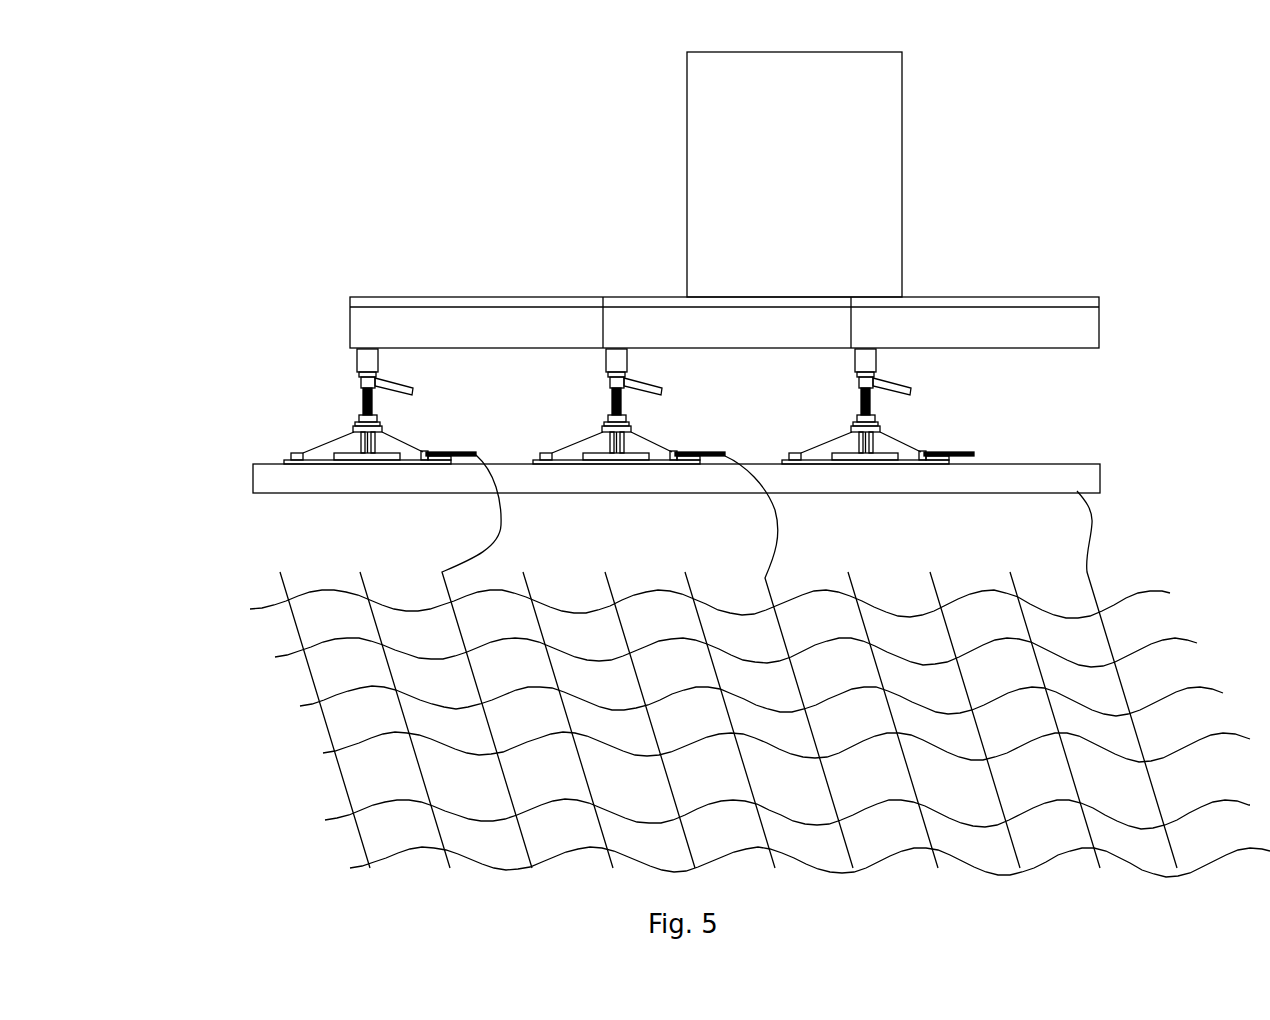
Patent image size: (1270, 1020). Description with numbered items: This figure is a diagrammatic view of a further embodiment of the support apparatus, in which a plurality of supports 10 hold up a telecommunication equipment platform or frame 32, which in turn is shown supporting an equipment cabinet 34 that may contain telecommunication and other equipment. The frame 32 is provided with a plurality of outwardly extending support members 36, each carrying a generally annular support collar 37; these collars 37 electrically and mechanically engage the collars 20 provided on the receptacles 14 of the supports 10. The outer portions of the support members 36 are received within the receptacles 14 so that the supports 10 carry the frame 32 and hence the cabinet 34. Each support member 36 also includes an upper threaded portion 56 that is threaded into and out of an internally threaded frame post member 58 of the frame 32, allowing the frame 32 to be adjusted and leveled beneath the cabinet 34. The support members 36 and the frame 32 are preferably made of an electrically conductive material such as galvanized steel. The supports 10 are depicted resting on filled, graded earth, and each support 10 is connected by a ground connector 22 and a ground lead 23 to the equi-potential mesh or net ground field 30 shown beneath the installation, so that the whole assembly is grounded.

The support 10 is at (1034, 418).
The receptacle 14 is at (358, 448).
The collar 20 is at (350, 428).
The ground connector 22 is at (427, 449).
The ground lead 23 is at (478, 451).
The equi-potential mesh or net ground field 30 is at (244, 636).
The telecommunication equipment platform or frame 32 is at (1106, 294).
The equipment cabinet 34 is at (905, 135).
The outwardly extending support member 36 is at (292, 395).
The annular support collar 37 is at (387, 420).
The upper threaded portion 56 is at (348, 386).
The frame post member 58 is at (353, 352).